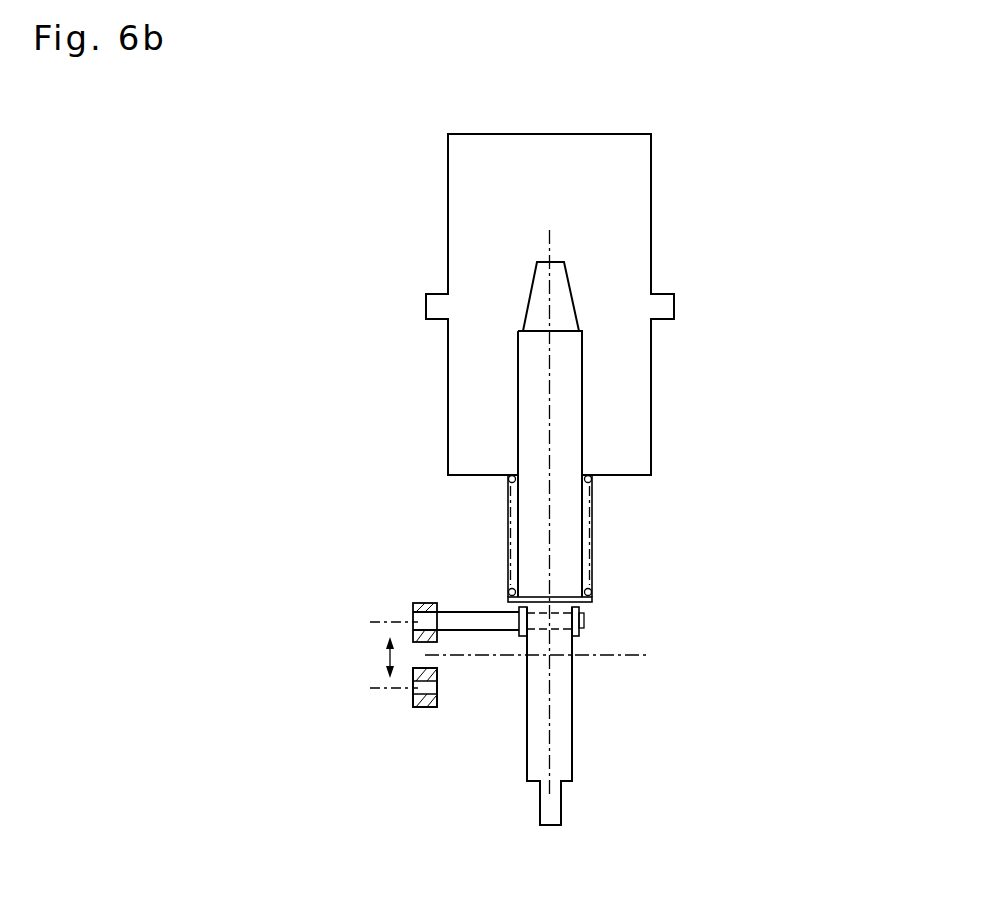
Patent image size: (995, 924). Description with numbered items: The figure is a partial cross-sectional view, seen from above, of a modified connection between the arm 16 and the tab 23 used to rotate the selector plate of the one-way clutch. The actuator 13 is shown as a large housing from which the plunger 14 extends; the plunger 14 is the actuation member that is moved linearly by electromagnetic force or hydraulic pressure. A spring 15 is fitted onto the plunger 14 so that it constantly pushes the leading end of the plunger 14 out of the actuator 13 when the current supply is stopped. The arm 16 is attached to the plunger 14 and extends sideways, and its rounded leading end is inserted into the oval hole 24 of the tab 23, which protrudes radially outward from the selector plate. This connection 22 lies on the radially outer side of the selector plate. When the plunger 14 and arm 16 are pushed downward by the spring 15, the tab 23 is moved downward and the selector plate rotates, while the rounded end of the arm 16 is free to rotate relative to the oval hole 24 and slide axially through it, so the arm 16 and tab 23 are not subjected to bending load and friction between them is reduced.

The actuator 13 is at (652, 197).
The plunger 14 is at (572, 718).
The spring 15 is at (592, 530).
The arm 16 is at (485, 632).
The connection 22 is at (401, 611).
The tab 23 is at (428, 602).
The oval hole 24 is at (412, 690).